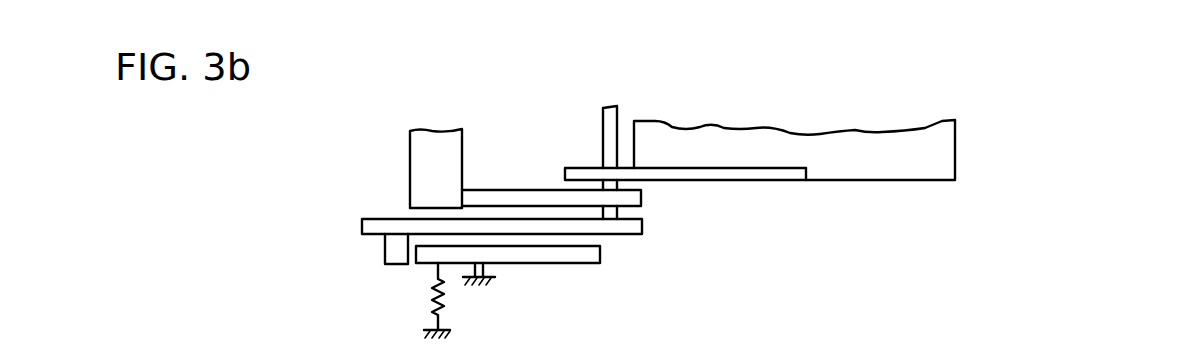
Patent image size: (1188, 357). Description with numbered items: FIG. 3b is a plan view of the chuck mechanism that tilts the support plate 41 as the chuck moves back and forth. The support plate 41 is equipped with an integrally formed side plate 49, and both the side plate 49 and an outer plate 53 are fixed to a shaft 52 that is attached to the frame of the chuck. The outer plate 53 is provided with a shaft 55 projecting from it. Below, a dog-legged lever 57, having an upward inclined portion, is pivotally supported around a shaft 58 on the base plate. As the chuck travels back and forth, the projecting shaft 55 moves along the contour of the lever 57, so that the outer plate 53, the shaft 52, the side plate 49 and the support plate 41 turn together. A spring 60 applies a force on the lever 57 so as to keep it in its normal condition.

The support plate 41 is at (893, 168).
The side plate 49 is at (722, 181).
The shaft 52 is at (603, 128).
The outer plate 53 is at (642, 234).
The shaft 55 is at (383, 263).
The lever 57 is at (555, 264).
The shaft 58 is at (486, 271).
The spring 60 is at (428, 303).